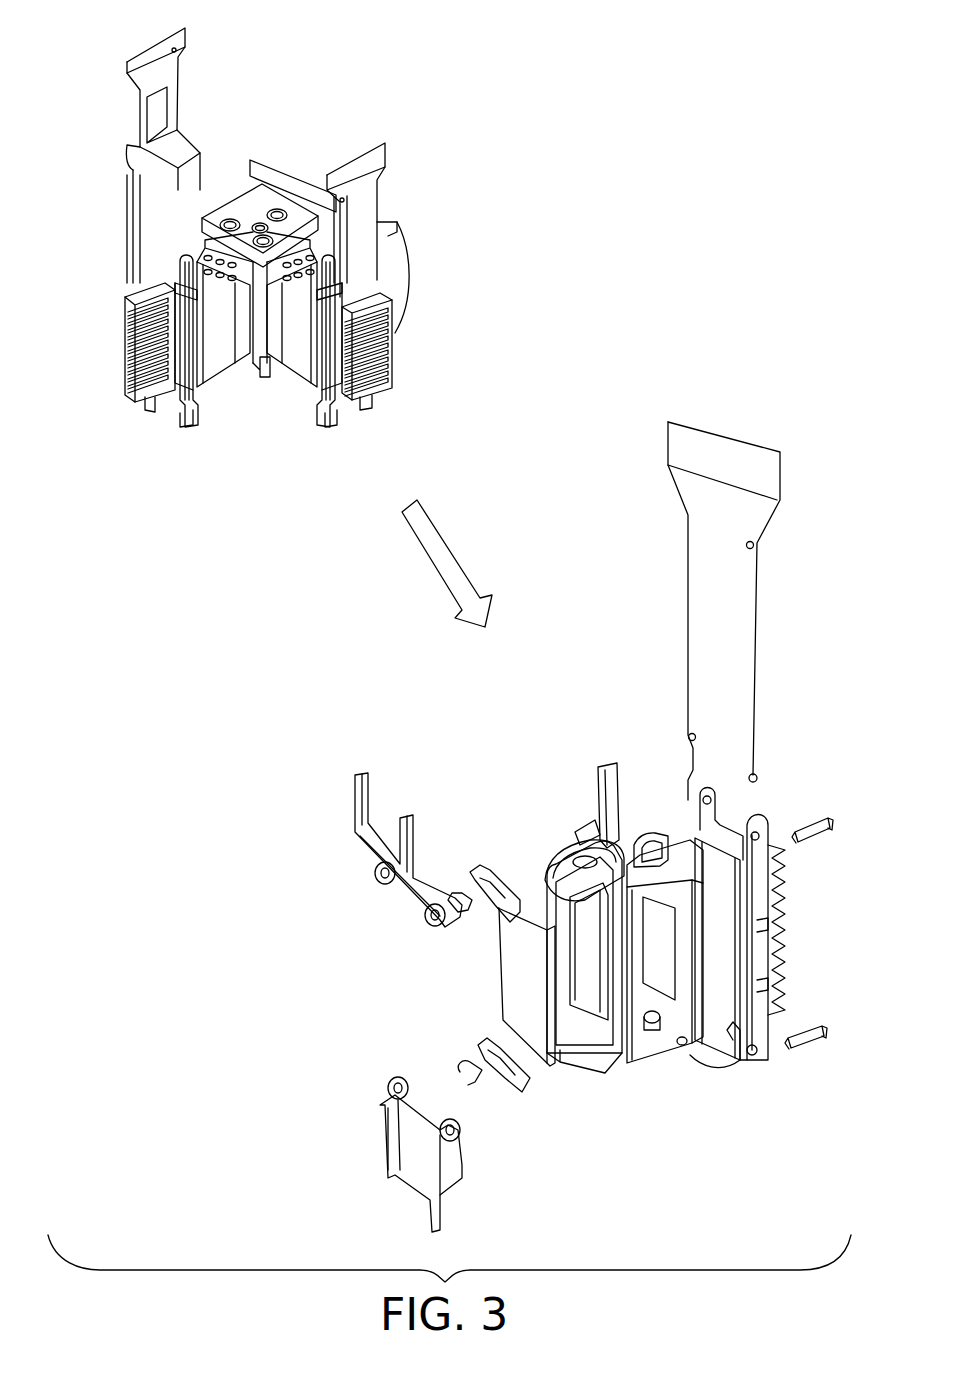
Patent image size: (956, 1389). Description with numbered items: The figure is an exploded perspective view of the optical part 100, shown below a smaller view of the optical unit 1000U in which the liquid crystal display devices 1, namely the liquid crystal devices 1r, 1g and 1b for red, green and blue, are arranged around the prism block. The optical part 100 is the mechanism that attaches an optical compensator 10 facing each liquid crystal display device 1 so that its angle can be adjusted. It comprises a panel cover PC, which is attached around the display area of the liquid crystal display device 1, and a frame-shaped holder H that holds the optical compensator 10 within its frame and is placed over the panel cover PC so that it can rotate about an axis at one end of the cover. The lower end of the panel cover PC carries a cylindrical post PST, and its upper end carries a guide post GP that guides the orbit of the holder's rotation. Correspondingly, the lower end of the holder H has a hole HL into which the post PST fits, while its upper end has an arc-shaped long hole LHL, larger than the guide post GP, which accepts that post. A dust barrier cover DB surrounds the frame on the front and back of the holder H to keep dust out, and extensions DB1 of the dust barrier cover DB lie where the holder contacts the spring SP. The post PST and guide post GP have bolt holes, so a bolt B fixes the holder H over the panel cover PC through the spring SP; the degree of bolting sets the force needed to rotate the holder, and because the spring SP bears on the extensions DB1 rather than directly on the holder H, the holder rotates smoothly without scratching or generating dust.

The optical unit 1000U is at (265, 92).
The liquid crystal device for blue 1b is at (125, 235).
The liquid crystal device for red 1r is at (125, 352).
The liquid crystal device for green 1g is at (400, 348).
The liquid crystal display device 1 is at (737, 938).
The optical compensator 10 is at (543, 1062).
The optical part 100 is at (507, 843).
The bolt B is at (456, 890).
The spring SP is at (490, 907).
The extension DB1 is at (505, 835).
The dust barrier cover DB is at (635, 1030).
The guide post GP is at (650, 855).
The long hole LHL is at (600, 830).
The holder H is at (622, 1063).
The hole HL is at (590, 1063).
The post PST is at (673, 1043).
The panel cover PC is at (757, 1060).